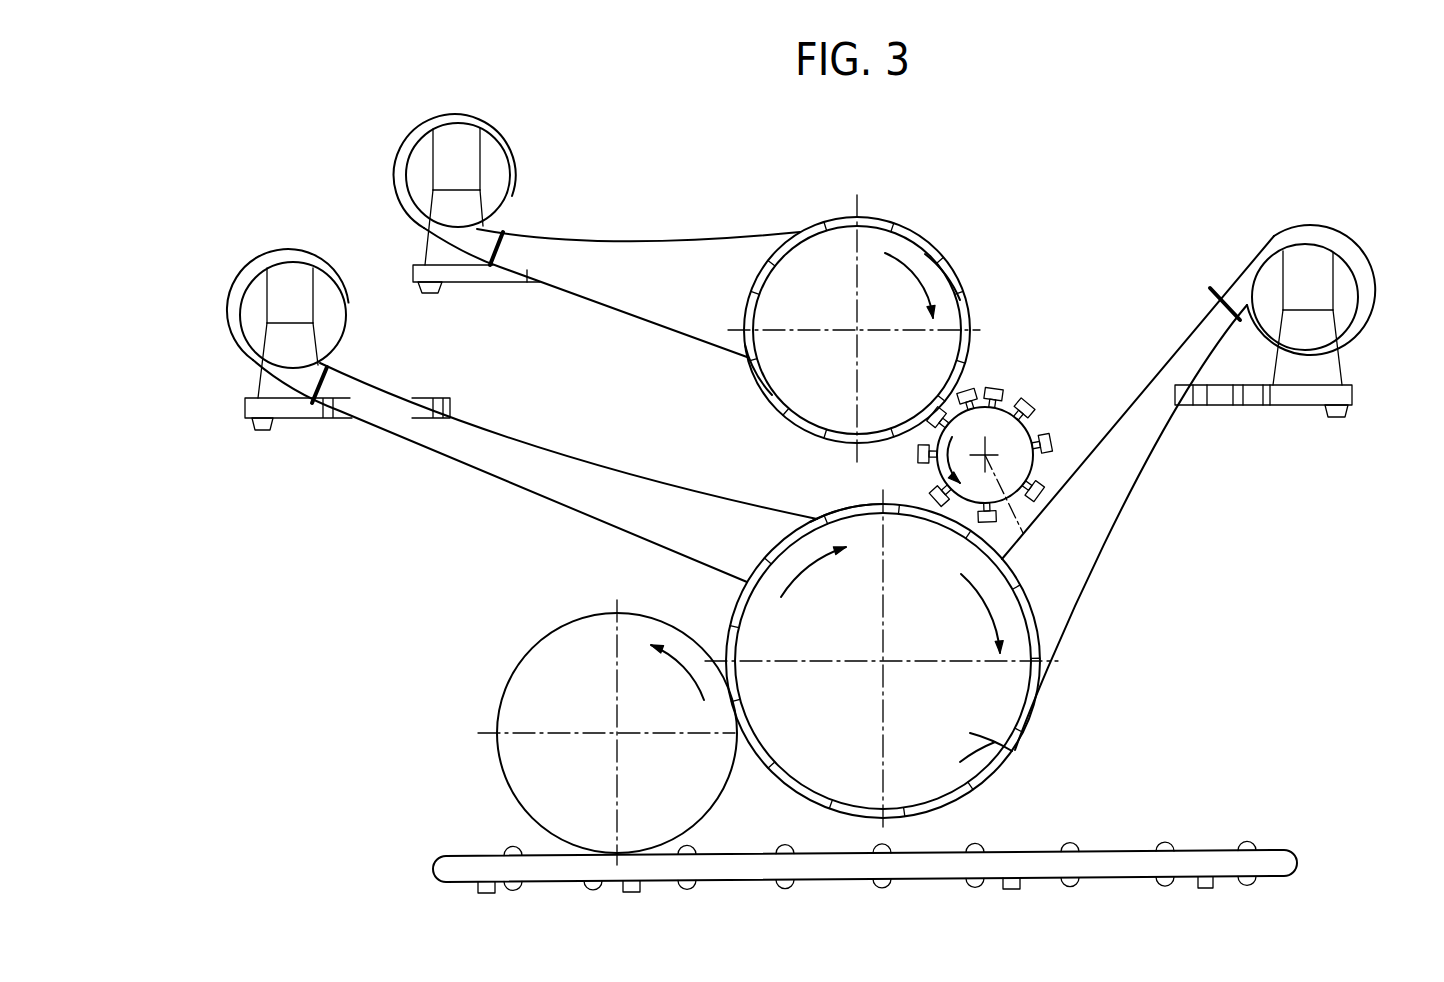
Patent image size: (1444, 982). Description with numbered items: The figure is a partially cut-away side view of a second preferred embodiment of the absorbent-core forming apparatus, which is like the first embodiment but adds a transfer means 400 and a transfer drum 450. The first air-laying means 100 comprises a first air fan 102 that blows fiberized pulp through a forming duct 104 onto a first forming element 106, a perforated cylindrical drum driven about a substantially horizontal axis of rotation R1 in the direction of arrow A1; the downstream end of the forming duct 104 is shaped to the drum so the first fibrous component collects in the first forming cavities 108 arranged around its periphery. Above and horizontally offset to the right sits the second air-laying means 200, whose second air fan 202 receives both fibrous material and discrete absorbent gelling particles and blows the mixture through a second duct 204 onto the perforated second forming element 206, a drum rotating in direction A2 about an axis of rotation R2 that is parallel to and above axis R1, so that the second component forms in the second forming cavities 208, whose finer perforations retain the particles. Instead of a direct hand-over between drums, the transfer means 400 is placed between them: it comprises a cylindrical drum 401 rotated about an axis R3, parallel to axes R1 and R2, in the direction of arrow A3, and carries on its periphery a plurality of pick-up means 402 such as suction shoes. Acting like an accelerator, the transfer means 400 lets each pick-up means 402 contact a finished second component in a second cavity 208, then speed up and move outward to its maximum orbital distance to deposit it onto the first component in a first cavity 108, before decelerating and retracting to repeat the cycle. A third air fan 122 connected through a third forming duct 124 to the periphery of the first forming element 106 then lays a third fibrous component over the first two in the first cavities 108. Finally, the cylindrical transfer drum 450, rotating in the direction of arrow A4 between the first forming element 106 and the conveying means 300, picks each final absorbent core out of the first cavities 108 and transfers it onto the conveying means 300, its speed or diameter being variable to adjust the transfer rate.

The first air-laying means 100 is at (1062, 724).
The first air fan 102 is at (248, 328).
The forming duct 104 is at (545, 447).
The first forming element 106 is at (983, 740).
The first forming cavities 108 is at (983, 777).
The third air fan 122 is at (1347, 290).
The third forming duct 124 is at (1103, 502).
The second air-laying means 200 is at (785, 216).
The second air fan 202 is at (413, 173).
The second duct 204 is at (607, 246).
The second forming element 206 is at (940, 283).
The second forming cavities 208 is at (756, 371).
The conveying means 300 is at (927, 867).
The transfer means 400 is at (1043, 413).
The cylindrical drum 401 is at (895, 502).
The pick-up means 402 is at (978, 390).
The transfer drum 450 is at (520, 688).
The direction of rotation of first drum A1 is at (781, 598).
The direction of rotation of second drum A2 is at (898, 253).
The direction of rotation of transfer means A3 is at (920, 463).
The direction of rotation of transfer drum A4 is at (703, 700).
The axis of rotation of first drum R1 is at (883, 662).
The axis of rotation of second drum R2 is at (857, 331).
The axis of rotation of transfer means R3 is at (1023, 533).